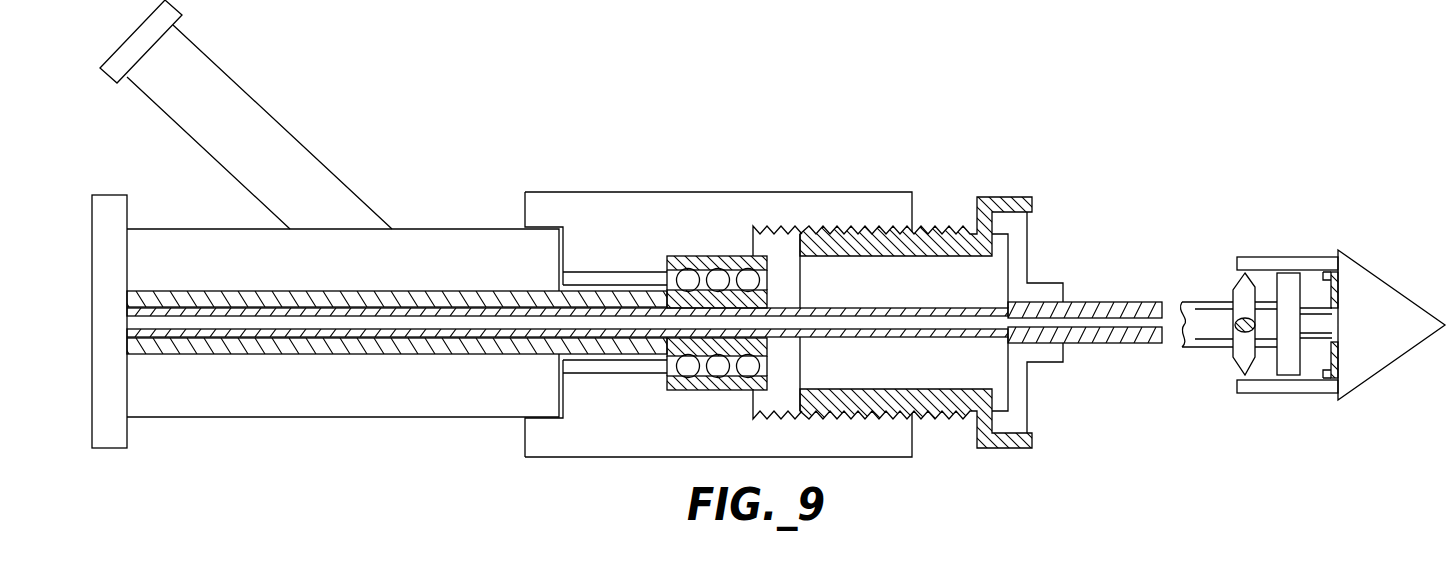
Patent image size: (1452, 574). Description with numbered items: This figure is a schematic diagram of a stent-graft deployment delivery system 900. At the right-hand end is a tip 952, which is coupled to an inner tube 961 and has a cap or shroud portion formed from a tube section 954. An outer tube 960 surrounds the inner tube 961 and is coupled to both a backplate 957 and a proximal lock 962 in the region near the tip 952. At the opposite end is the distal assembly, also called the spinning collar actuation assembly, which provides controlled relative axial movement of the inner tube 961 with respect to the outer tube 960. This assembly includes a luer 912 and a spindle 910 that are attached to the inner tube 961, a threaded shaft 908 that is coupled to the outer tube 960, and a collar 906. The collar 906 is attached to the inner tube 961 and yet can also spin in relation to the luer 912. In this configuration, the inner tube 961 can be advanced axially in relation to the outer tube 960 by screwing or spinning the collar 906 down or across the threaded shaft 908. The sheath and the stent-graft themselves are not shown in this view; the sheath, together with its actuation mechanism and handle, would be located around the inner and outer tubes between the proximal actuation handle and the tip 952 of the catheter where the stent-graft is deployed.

The stent-graft deployment delivery system 900 is at (517, 113).
The collar 906 is at (620, 200).
The threaded shaft 908 is at (930, 425).
The spindle 910 is at (722, 265).
The luer 912 is at (480, 238).
The tip 952 is at (1395, 300).
The tube section 954 is at (1295, 263).
The backplate 957 is at (1288, 283).
The outer tube 960 is at (1133, 302).
The inner tube 961 is at (1112, 333).
The proximal lock 962 is at (1243, 353).